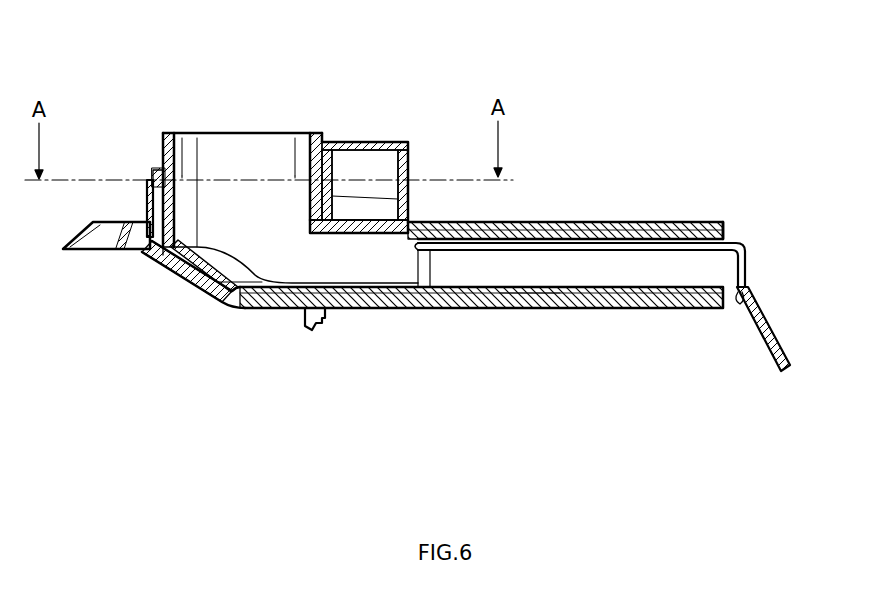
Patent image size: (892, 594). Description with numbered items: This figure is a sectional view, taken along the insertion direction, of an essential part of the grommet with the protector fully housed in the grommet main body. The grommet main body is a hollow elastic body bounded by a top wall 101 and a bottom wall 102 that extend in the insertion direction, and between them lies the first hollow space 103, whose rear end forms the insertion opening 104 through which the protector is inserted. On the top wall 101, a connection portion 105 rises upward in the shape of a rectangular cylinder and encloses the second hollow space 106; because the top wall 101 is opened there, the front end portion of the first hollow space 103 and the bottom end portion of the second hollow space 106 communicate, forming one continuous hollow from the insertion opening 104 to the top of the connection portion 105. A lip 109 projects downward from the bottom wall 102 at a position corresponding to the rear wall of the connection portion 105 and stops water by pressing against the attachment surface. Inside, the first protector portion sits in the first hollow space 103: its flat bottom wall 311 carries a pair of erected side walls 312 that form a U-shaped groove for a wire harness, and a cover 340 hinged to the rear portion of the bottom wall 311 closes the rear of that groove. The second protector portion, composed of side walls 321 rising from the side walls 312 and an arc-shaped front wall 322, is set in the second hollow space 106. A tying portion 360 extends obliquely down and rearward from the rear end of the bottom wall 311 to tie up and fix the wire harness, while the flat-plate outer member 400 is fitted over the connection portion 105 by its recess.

The top wall 101 is at (557, 228).
The bottom wall 102 is at (622, 309).
The first hollow space 103 is at (607, 265).
The insertion opening 104 is at (724, 227).
The connection portion 105 is at (168, 147).
The second hollow space 106 is at (213, 153).
The lip 109 is at (313, 324).
The bottom wall 311 is at (528, 300).
The side walls 312 is at (363, 263).
The side walls 321 is at (250, 198).
The front wall 322 is at (156, 209).
The cover 340 is at (677, 240).
The tying portion 360 is at (787, 372).
The outer member 400 is at (380, 147).